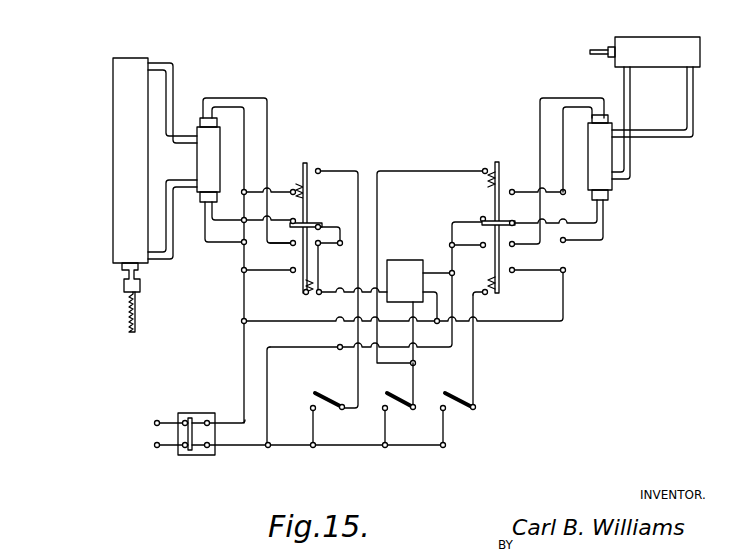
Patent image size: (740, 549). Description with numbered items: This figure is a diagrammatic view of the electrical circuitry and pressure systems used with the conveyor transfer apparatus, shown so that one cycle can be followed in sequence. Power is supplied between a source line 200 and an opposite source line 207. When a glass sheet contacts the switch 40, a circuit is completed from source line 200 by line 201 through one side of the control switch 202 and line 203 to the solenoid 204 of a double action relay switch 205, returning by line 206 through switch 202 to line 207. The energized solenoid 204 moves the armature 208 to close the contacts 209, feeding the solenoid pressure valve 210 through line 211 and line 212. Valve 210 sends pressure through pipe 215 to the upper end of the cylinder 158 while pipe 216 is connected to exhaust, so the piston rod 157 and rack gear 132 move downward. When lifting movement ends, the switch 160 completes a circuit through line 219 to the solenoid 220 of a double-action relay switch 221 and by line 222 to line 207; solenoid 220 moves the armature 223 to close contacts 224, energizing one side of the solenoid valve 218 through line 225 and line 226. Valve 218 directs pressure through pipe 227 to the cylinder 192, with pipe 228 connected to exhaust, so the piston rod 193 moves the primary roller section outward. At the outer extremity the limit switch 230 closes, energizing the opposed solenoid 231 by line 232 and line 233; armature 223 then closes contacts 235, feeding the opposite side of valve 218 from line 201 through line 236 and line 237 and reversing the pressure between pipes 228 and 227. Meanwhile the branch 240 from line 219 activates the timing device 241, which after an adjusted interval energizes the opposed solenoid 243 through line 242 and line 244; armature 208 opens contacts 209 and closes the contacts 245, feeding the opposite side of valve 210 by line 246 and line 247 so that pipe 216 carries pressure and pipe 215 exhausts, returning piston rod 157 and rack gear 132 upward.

The cylinder 158 is at (112, 160).
The piston rod 157 is at (126, 272).
The rack gear 132 is at (129, 311).
The pipe 215 is at (174, 68).
The pipe 216 is at (168, 256).
The solenoid pressure valve 210 is at (210, 152).
The line 211 is at (237, 97).
The line 212 is at (247, 138).
The line 246 is at (228, 214).
The line 247 is at (217, 246).
The line 206 is at (280, 187).
The solenoid 204 is at (308, 191).
The line 203 is at (345, 160).
The double action relay switch 205 is at (313, 220).
The contacts 245 is at (293, 218).
The armature 208 is at (293, 246).
The contacts 209 is at (320, 247).
The line 244 is at (252, 272).
The opposed solenoid 243 is at (304, 292).
The line 242 is at (321, 295).
The line 222 is at (270, 322).
The line 201 is at (420, 348).
The timing device 241 is at (400, 278).
The branch 240 is at (414, 334).
The line 219 is at (425, 170).
The contacts 224 is at (451, 266).
The armature 223 is at (494, 234).
The double-action relay switch 221 is at (492, 217).
The solenoid 220 is at (492, 185).
The opposed solenoid 231 is at (503, 292).
The line 232 is at (474, 355).
The contacts 235 is at (514, 195).
The line 233 is at (515, 273).
The line 225 is at (568, 97).
The line 226 is at (562, 128).
The line 236 is at (582, 214).
The line 237 is at (593, 243).
The solenoid valve 218 is at (598, 172).
The pipe 228 is at (627, 108).
The pipe 227 is at (653, 137).
The cylinder 192 is at (653, 52).
The piston rod 193 is at (596, 48).
The control switch 202 is at (200, 412).
The opposite source line 207 is at (156, 420).
The source line 200 is at (156, 448).
The switch 40 is at (330, 402).
The switch 160 is at (400, 402).
The limit switch 230 is at (460, 402).